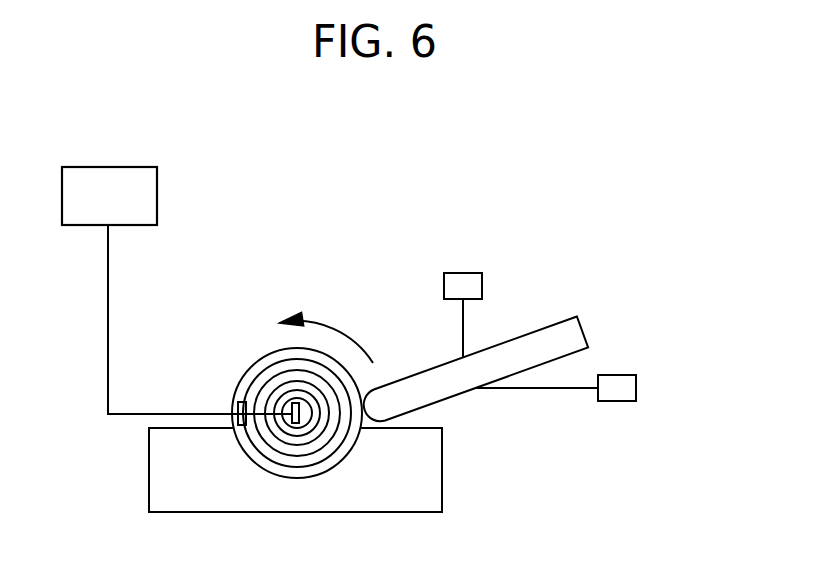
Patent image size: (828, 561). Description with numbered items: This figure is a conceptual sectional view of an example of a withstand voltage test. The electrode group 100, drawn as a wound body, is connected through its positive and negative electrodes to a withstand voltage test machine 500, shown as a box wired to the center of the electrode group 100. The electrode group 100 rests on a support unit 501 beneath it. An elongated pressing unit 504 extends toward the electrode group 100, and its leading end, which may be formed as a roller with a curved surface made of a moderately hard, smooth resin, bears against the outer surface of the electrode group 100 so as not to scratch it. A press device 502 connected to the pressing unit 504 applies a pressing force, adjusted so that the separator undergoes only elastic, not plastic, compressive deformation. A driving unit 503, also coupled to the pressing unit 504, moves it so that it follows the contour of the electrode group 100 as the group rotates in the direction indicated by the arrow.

The electrode group 100 is at (260, 358).
The withstand voltage test machine 500 is at (113, 167).
The support unit 501 is at (442, 468).
The press device 502 is at (472, 273).
The driving unit 503 is at (625, 375).
The pressing unit 504 is at (572, 318).